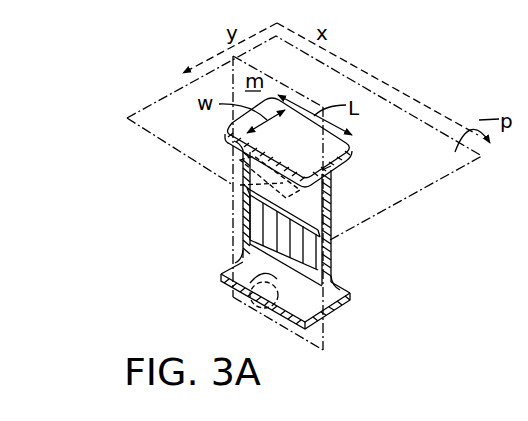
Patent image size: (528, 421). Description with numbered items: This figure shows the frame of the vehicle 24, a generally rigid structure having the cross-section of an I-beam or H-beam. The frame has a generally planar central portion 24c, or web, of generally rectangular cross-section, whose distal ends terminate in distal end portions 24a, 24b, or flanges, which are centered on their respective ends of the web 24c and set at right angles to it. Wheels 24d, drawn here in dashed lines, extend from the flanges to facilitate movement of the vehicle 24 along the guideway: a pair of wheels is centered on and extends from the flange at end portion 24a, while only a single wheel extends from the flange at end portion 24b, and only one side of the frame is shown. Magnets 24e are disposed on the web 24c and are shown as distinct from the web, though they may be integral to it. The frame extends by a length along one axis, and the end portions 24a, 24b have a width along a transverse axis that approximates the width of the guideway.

The vehicle 24 is at (307, 150).
The distal end portion 24a is at (341, 163).
The distal end portion 24b is at (340, 288).
The central portion 24c is at (331, 206).
The wheels 24d is at (240, 185).
The magnets 24e is at (253, 225).